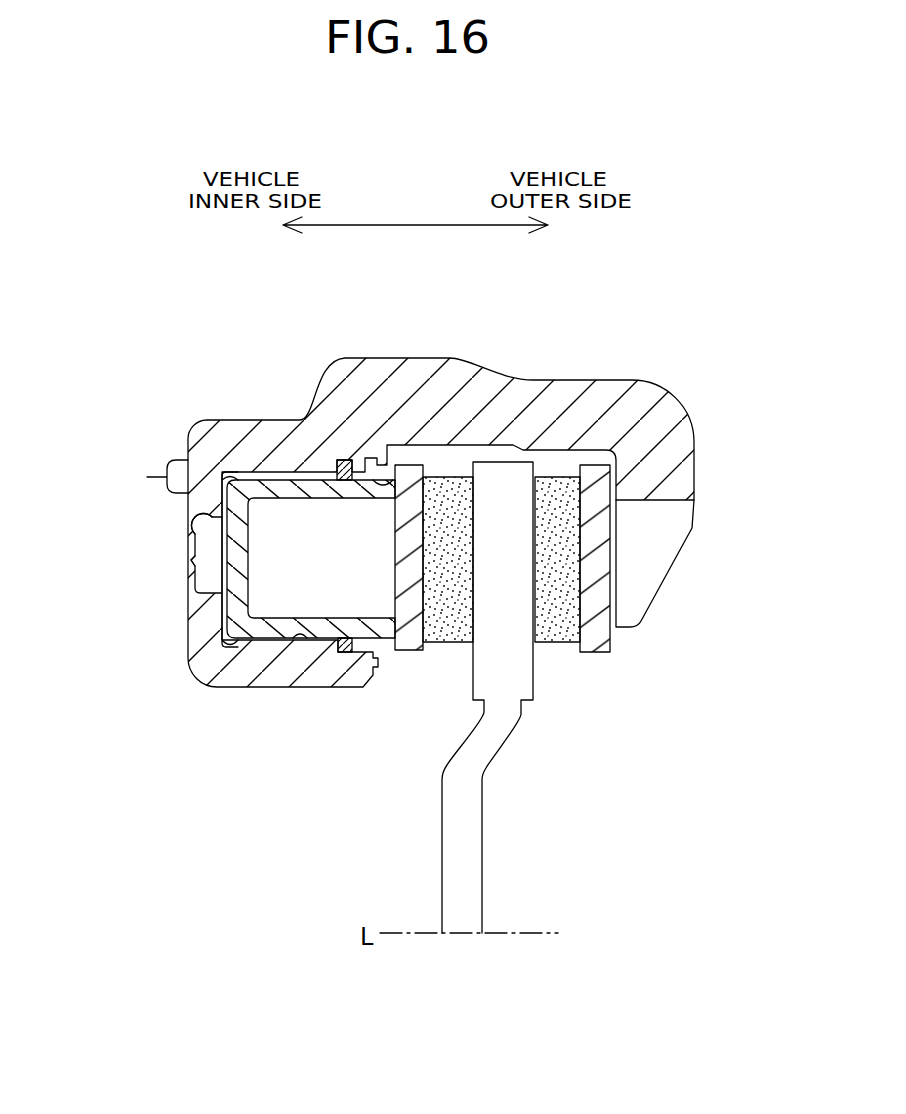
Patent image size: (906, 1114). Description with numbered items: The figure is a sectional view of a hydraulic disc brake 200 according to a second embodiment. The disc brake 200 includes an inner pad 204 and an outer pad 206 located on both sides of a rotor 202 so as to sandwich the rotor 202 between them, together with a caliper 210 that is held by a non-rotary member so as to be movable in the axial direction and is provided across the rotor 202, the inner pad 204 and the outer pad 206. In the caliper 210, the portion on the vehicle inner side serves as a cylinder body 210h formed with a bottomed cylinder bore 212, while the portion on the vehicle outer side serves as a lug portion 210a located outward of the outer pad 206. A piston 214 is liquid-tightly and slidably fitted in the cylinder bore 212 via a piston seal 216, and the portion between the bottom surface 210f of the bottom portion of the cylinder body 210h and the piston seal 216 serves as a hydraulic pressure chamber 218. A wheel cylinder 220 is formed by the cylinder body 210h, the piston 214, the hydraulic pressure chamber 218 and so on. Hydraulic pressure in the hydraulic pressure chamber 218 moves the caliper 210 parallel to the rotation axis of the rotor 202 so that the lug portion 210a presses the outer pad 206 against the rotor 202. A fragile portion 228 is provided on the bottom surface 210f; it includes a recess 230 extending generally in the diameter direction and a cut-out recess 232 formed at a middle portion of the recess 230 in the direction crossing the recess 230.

The disc brake 200 is at (635, 348).
The rotor 202 is at (496, 470).
The inner pad 204 is at (457, 447).
The outer pad 206 is at (571, 447).
The caliper 210 is at (229, 412).
The lug portion 210a is at (682, 552).
The bottom surface 210f is at (220, 620).
The cylinder body 210h is at (229, 676).
The cylinder bore 212 is at (345, 653).
The piston 214 is at (272, 489).
The piston seal 216 is at (345, 464).
The hydraulic pressure chamber 218 is at (220, 628).
The wheel cylinder 220 is at (382, 684).
The fragile portion 228 is at (194, 500).
The recess 230 is at (188, 533).
The cut-out recess 232 is at (199, 567).